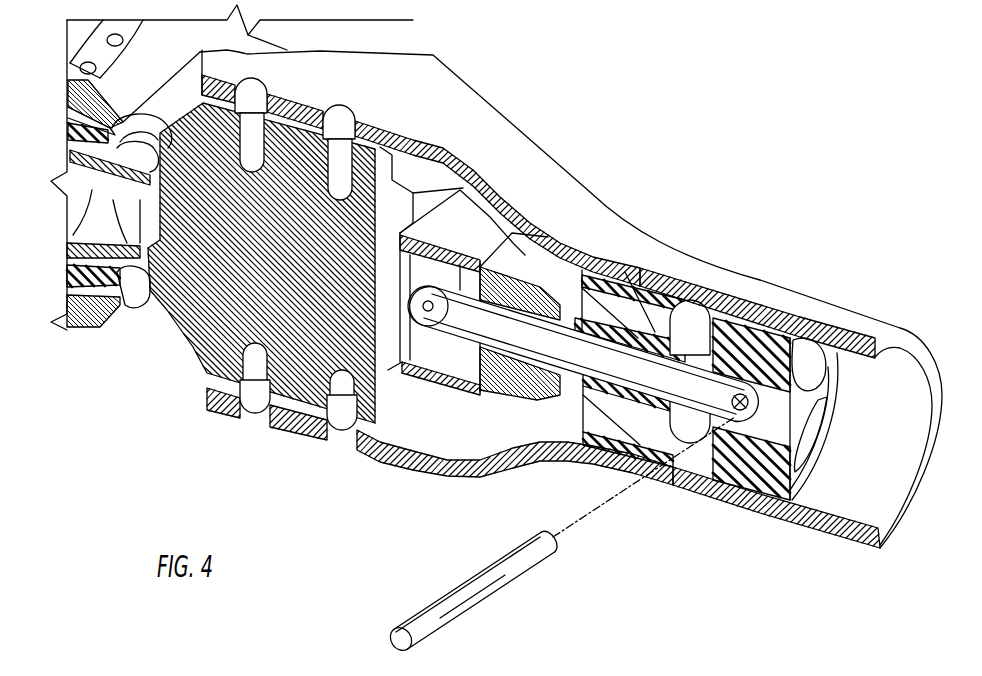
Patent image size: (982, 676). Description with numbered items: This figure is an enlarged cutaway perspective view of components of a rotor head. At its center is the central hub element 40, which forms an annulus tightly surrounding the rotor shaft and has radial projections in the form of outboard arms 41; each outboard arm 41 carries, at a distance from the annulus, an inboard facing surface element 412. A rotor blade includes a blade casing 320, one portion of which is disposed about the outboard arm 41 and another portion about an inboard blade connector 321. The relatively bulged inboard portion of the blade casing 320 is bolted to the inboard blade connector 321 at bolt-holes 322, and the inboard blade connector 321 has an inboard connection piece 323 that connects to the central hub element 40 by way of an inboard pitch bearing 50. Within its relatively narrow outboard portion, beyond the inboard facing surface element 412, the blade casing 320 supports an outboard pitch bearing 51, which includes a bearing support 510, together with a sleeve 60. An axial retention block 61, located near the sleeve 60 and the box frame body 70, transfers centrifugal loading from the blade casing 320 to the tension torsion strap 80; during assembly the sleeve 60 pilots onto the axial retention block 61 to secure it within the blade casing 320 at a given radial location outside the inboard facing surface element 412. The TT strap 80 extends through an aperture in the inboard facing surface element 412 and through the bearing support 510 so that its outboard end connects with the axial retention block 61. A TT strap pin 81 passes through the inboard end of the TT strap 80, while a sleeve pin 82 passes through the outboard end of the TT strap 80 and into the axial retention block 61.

The central hub element 40 is at (57, 330).
The outboard arm 41 is at (288, 49).
The inboard pitch bearing 50 is at (110, 312).
The outboard pitch bearing 51 is at (624, 355).
The sleeve 60 is at (755, 304).
The axial retention block 61 is at (822, 338).
The box frame body 70 is at (498, 233).
The tension torsion (TT) strap 80 is at (539, 345).
The TT strap pin 81 is at (426, 322).
The sleeve pin 82 is at (502, 574).
The blade casing 320 is at (497, 142).
The inboard blade connector 321 is at (255, 288).
The bolt-holes 322 is at (350, 104).
The inboard connection piece 323 is at (150, 278).
The inboard facing surface element 412 is at (530, 260).
The bearing support 510 is at (668, 340).